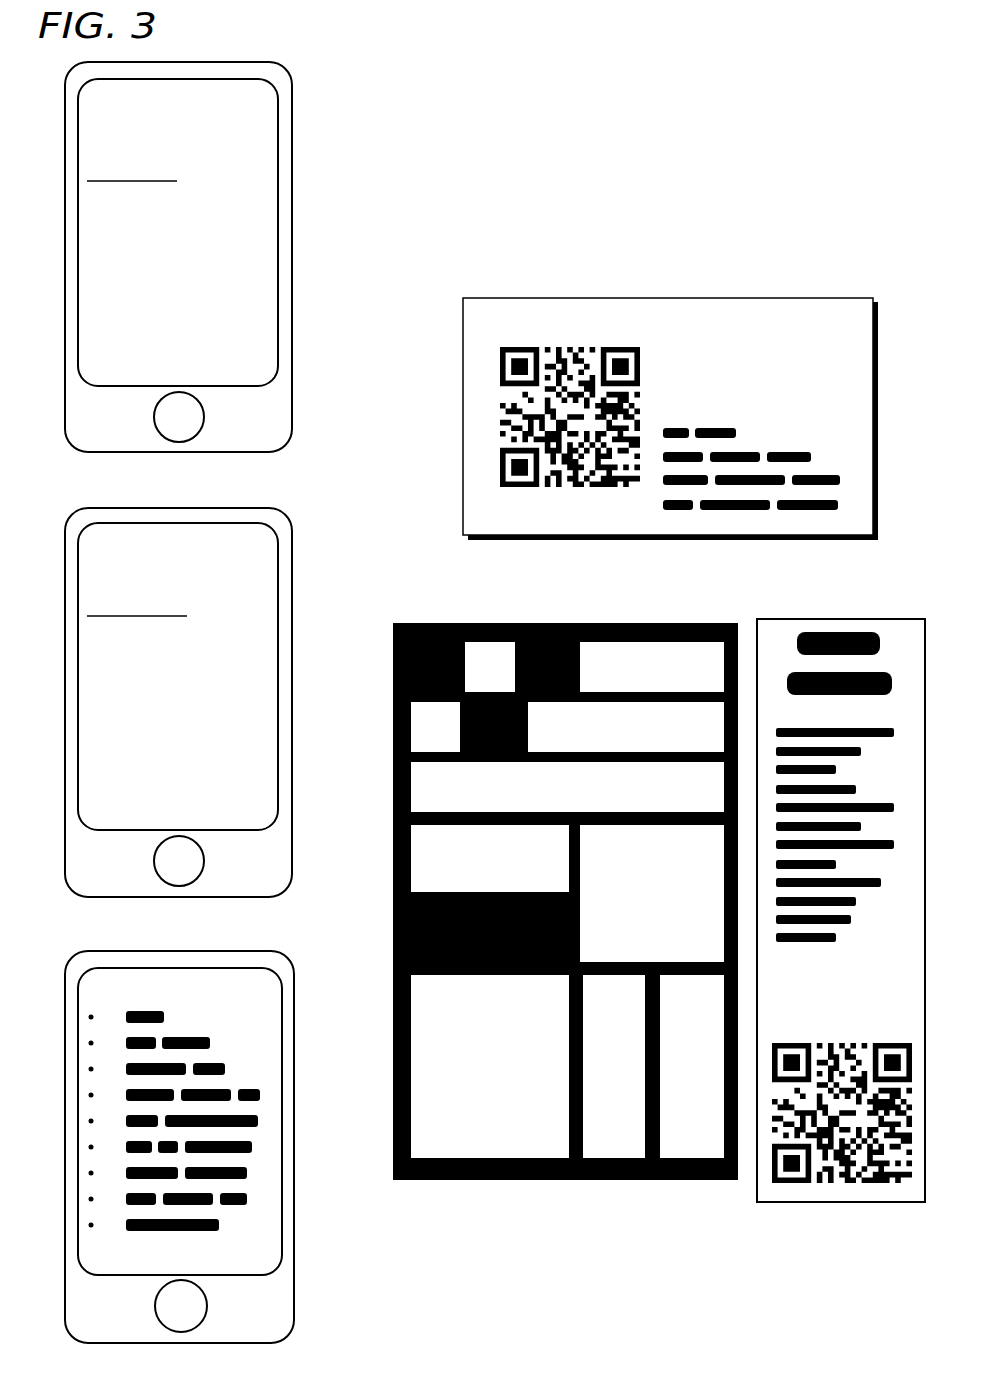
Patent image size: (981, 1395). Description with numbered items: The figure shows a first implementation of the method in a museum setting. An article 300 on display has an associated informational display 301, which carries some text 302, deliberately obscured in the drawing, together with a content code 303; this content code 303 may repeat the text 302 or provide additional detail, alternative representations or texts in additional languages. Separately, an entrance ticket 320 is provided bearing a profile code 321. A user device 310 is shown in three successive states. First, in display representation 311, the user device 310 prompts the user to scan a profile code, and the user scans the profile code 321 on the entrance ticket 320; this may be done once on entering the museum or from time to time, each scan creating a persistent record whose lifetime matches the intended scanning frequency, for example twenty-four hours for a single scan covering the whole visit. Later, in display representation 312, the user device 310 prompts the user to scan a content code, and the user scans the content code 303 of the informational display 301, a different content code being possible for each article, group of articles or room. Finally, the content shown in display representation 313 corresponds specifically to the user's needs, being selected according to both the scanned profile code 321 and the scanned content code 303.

The article 300 is at (594, 1183).
The informational display 301 is at (841, 951).
The text 302 is at (833, 702).
The content code 303 is at (838, 1185).
The user device 310 is at (202, 702).
The display representation 311 is at (258, 145).
The display representation 312 is at (258, 546).
The display representation 313 is at (249, 1247).
The entrance ticket 320 is at (670, 357).
The profile code 321 is at (593, 343).